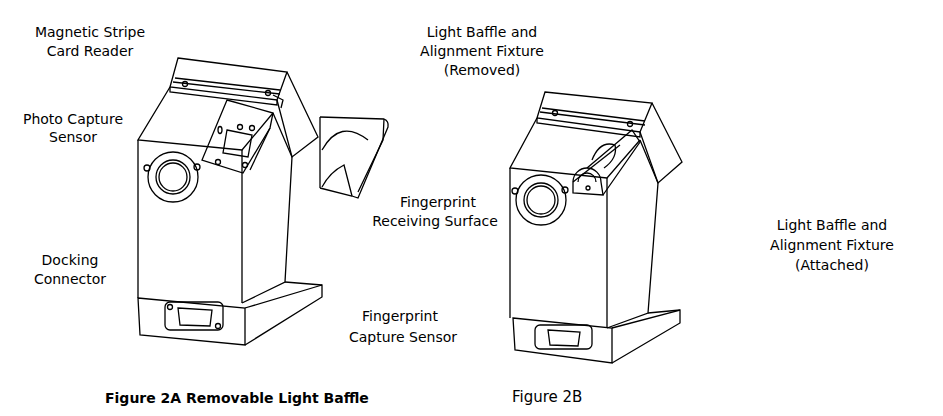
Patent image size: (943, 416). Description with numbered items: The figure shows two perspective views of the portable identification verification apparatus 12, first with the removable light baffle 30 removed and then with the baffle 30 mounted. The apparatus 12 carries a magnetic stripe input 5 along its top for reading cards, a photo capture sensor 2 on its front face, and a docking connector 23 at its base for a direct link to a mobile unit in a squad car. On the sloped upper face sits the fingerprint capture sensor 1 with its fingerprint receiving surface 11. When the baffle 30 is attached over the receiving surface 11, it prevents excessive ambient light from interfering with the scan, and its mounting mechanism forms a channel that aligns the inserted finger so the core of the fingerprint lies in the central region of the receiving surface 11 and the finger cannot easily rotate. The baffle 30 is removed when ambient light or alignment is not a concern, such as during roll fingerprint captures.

In FIG. 2A, the apparatus 12 is at (282, 62).
In FIG. 2B, the apparatus 12 is at (663, 93).
In FIG. 2A, the magnetic stripe input 5 is at (163, 100).
In FIG. 2A, the photo capture sensor 2 is at (147, 183).
In FIG. 2A, the docking connector 23 is at (155, 333).
In FIG. 2A, the fingerprint capture sensor 1 is at (233, 165).
In FIG. 2A, the fingerprint receiving surface 11 is at (237, 147).
In FIG. 2A, the light baffle 30 is at (392, 110).
In FIG. 2B, the light baffle 30 is at (622, 173).